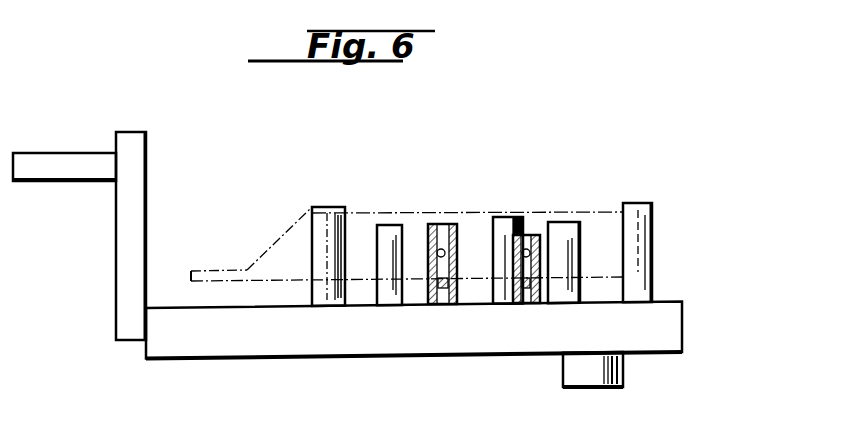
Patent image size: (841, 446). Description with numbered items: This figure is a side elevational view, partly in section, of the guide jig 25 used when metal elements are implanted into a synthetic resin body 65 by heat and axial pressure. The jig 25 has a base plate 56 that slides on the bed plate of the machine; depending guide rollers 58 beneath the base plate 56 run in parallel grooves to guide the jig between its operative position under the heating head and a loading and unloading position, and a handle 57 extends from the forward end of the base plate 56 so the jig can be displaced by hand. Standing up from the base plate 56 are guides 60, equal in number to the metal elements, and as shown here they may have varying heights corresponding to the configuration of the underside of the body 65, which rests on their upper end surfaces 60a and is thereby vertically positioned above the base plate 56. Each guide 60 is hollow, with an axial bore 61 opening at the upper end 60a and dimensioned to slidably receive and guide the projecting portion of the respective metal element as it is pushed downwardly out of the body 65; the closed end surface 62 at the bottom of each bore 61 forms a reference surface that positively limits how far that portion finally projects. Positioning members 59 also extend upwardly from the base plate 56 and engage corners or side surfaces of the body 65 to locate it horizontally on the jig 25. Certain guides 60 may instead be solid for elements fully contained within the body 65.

The guide jig 25 is at (614, 202).
The base plate 56 is at (190, 353).
The handle 57 is at (74, 182).
The guide roller 58 is at (585, 387).
The positioning member 59 is at (312, 252).
The guide 60 is at (404, 240).
The upper end surface of guide 60a is at (392, 224).
The axial bore 61 is at (439, 256).
The closed end surface of bore 62 is at (444, 288).
The synthetic resin body 65 is at (362, 210).